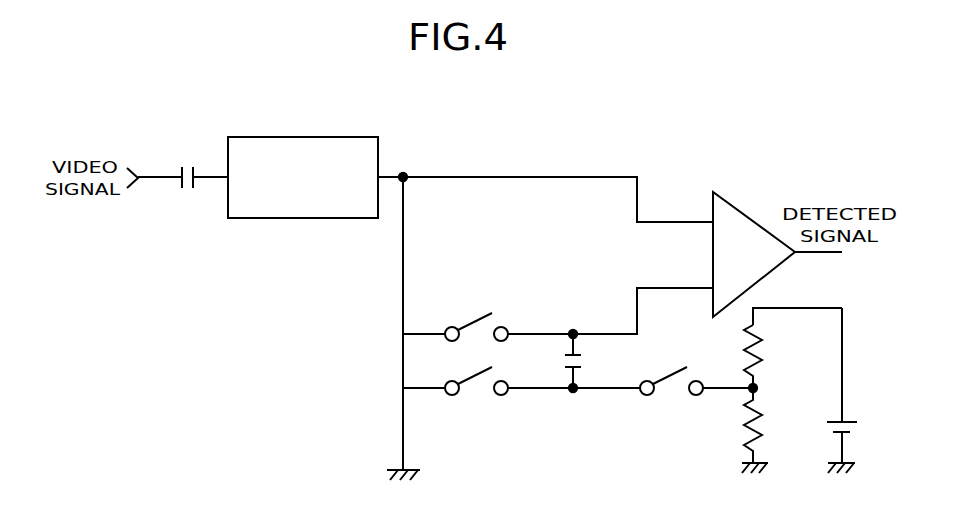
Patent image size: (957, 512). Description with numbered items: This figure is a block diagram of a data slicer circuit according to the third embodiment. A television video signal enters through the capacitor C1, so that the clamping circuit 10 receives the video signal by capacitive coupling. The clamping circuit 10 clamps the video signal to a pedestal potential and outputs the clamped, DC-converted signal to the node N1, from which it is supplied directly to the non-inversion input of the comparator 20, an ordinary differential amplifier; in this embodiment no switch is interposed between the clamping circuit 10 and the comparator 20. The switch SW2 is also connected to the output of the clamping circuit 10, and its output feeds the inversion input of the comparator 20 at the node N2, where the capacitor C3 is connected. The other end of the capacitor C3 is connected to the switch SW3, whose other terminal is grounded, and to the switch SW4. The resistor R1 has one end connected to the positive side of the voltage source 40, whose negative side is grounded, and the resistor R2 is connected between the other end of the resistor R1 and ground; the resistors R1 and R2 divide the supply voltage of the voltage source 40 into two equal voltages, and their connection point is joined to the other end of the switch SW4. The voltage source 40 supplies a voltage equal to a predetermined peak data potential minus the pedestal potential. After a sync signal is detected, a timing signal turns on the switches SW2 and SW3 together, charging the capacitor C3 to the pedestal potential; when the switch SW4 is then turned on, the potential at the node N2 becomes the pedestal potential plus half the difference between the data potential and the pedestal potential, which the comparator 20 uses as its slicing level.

The capacitor C1 is at (187, 163).
The clamping circuit 10 is at (303, 218).
The node N1 is at (403, 172).
The comparator 20 is at (733, 203).
The switch SW2 is at (483, 338).
The node N2 is at (575, 327).
The capacitor C3 is at (582, 361).
The switch SW3 is at (483, 392).
The switch SW4 is at (673, 393).
The resistor R1 is at (762, 367).
The resistor R2 is at (762, 446).
The voltage source 40 is at (847, 415).